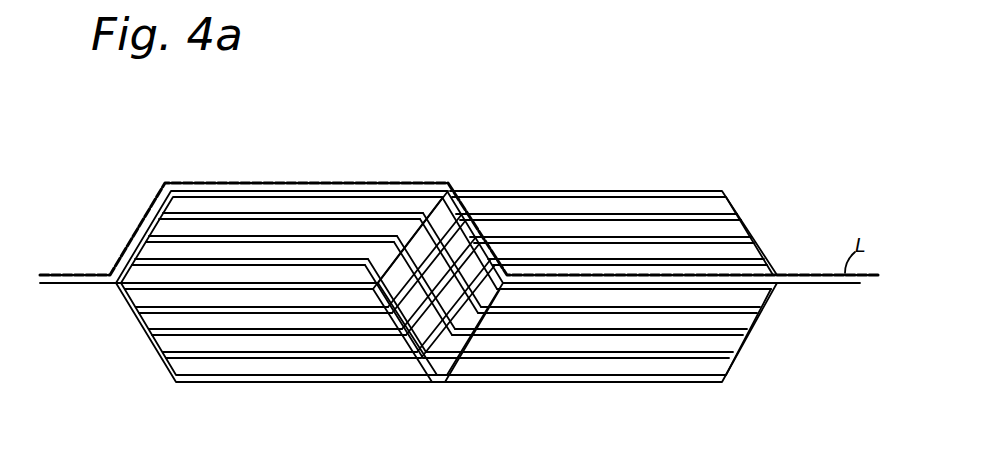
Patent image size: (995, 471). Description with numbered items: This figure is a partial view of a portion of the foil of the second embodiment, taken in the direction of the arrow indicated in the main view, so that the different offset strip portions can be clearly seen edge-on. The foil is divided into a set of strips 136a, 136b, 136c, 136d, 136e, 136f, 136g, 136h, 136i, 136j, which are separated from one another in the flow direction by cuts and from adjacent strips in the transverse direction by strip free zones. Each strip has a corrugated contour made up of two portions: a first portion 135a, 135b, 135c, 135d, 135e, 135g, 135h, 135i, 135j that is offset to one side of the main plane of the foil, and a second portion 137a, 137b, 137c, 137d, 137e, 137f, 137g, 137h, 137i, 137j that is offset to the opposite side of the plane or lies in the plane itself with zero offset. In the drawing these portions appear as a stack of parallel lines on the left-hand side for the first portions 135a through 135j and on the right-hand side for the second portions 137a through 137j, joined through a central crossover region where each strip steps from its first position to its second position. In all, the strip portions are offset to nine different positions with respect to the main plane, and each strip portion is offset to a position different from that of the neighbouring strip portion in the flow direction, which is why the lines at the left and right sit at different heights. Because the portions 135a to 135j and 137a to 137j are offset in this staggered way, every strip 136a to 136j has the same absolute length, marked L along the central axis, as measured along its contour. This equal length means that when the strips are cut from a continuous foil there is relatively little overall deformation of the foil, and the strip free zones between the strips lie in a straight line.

The first strip portion 135a is at (195, 195).
The first strip portion 135b is at (155, 198).
The first strip portion 135c is at (140, 220).
The first strip portion 135d is at (125, 242).
The first strip portion 135e is at (102, 283).
The first strip portion 135g is at (140, 309).
The first strip portion 135h is at (152, 330).
The first strip portion 135i is at (164, 353).
The first strip portion 135j is at (176, 378).
The strip 136a is at (240, 188).
The strip 136b is at (273, 208).
The strip 136c is at (316, 233).
The strip 136d is at (355, 253).
The strip 136e is at (372, 280).
The strip 136f is at (500, 188).
The strip 136g is at (205, 318).
The strip 136h is at (268, 337).
The strip 136i is at (333, 362).
The strip 136j is at (414, 388).
The second strip portion 137a is at (600, 286).
The second strip portion 137b is at (745, 312).
The second strip portion 137c is at (712, 335).
The second strip portion 137d is at (692, 358).
The second strip portion 137e is at (665, 383).
The second strip portion 137f is at (691, 190).
The second strip portion 137g is at (738, 212).
The second strip portion 137h is at (744, 230).
The second strip portion 137i is at (761, 249).
The second strip portion 137j is at (774, 272).